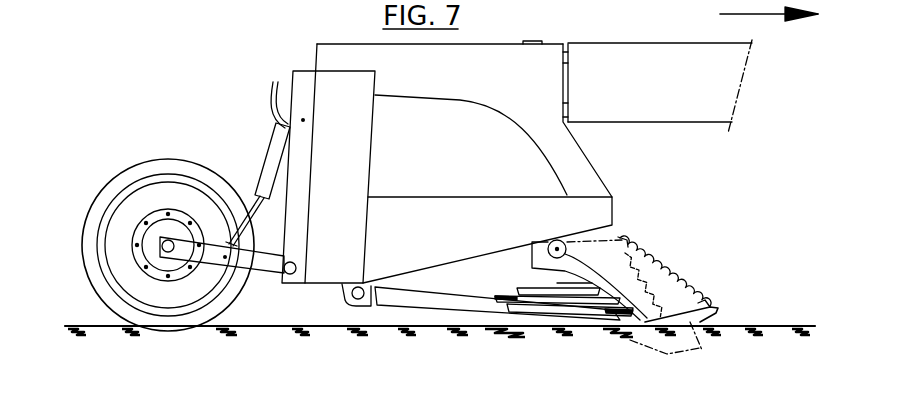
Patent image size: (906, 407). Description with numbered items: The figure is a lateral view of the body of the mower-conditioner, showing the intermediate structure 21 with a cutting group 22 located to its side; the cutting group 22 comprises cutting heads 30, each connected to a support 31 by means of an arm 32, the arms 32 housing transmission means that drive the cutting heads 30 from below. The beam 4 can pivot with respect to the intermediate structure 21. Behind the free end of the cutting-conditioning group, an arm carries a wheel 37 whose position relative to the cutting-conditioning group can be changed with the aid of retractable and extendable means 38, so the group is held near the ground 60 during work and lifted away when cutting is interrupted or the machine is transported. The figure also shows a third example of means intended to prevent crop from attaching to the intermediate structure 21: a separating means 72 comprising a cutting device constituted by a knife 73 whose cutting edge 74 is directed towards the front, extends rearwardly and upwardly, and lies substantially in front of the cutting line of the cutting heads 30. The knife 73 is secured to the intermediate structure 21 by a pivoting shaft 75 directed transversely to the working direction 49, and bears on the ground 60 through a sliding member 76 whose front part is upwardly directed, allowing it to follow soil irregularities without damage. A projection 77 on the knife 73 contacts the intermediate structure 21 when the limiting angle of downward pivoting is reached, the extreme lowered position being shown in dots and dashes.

The beam 4 is at (667, 60).
The intermediate structure 21 is at (330, 62).
The cutting group 22 is at (546, 330).
The cutting head 30 is at (526, 277).
The support 31 is at (340, 287).
The arm 32 is at (415, 297).
The wheel 37 is at (115, 187).
The retractable and extendable means 38 is at (272, 170).
The working direction 49 is at (767, 18).
The ground 60 is at (215, 393).
The separating means 72 is at (703, 257).
The knife 73 is at (663, 300).
The cutting edge 74 is at (641, 247).
The pivoting shaft 75 is at (548, 242).
The sliding member 76 is at (723, 321).
The projection 77 is at (530, 245).